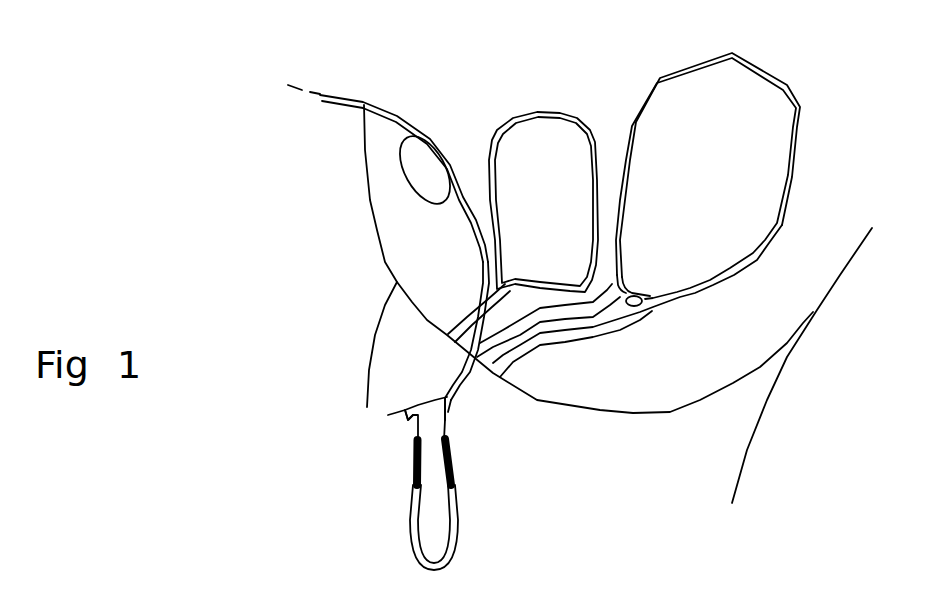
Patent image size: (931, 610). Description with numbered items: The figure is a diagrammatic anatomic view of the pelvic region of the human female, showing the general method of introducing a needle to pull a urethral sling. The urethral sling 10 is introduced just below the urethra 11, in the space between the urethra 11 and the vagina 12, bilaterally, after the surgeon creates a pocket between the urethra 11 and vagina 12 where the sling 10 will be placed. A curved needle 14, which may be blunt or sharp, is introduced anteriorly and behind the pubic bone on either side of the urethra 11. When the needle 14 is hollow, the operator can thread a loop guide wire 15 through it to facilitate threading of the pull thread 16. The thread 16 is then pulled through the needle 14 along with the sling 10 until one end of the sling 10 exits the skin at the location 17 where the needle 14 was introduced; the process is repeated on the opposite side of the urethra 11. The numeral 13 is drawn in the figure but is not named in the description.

The urethral sling 10 is at (413, 455).
The urethra 11 is at (475, 318).
The vagina 12 is at (523, 355).
The bowel 13 is at (780, 73).
The curved needle 14 is at (364, 105).
The loop guide wire 15 is at (472, 362).
The pull thread 16 is at (408, 420).
The location 17 is at (330, 98).